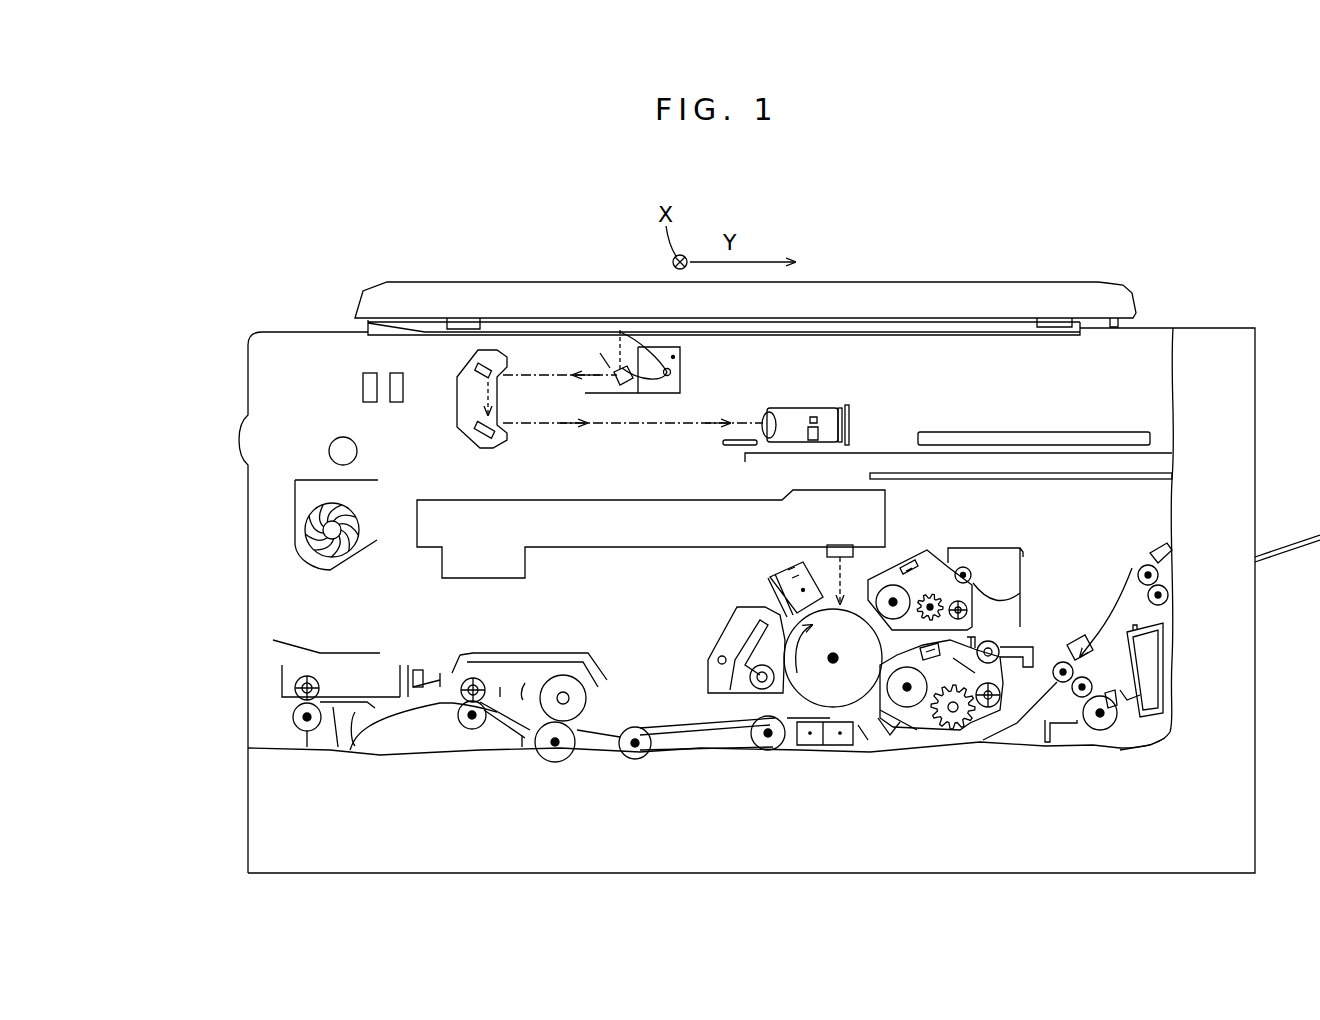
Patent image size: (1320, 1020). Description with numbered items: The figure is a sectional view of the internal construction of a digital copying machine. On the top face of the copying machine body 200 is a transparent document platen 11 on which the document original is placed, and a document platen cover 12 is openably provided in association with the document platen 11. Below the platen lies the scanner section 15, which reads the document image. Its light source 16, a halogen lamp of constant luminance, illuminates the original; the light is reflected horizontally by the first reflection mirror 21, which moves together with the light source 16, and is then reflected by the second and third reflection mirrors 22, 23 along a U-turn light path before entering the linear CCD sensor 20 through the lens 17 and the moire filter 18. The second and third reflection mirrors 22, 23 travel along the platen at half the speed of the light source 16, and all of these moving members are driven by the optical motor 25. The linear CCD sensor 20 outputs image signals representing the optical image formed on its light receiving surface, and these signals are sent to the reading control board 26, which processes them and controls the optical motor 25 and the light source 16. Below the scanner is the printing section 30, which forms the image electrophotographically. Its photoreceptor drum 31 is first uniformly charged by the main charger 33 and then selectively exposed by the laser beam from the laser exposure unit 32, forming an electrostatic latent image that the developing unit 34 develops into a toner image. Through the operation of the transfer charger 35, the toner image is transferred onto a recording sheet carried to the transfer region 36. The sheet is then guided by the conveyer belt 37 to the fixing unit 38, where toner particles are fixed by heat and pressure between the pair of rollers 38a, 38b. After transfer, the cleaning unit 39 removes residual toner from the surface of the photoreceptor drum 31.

The copying machine body 200 is at (1172, 326).
The document platen 11 is at (580, 335).
The document platen cover 12 is at (942, 298).
The scanner section 15 is at (293, 370).
The light source 16 is at (667, 380).
The lens 17 is at (765, 418).
The moire filter 18 is at (809, 418).
The linear CCD sensor 20 is at (848, 422).
The first reflection mirror 21 is at (626, 388).
The second reflection mirror 22 is at (480, 367).
The third reflection mirror 23 is at (473, 433).
The optical motor 25 is at (339, 437).
The reading control board 26 is at (1060, 432).
The printing section 30 is at (340, 620).
The photoreceptor drum 31 is at (817, 693).
The laser exposure unit 32 is at (627, 540).
The main charger 33 is at (787, 592).
The developing unit 34 is at (1037, 552).
The transfer charger 35 is at (845, 737).
The transfer region 36 is at (837, 703).
The conveyer belt 37 is at (673, 725).
The fixing unit 38 is at (592, 769).
The roller 38a is at (551, 768).
The roller 38b is at (582, 722).
The cleaning unit 39 is at (738, 630).